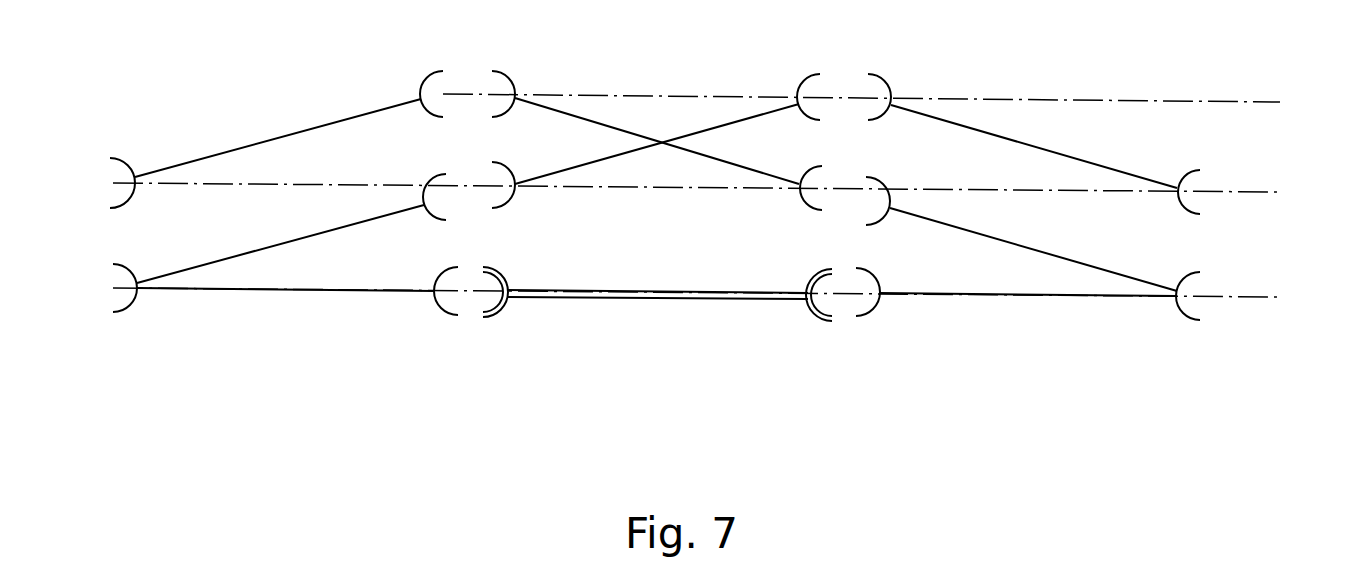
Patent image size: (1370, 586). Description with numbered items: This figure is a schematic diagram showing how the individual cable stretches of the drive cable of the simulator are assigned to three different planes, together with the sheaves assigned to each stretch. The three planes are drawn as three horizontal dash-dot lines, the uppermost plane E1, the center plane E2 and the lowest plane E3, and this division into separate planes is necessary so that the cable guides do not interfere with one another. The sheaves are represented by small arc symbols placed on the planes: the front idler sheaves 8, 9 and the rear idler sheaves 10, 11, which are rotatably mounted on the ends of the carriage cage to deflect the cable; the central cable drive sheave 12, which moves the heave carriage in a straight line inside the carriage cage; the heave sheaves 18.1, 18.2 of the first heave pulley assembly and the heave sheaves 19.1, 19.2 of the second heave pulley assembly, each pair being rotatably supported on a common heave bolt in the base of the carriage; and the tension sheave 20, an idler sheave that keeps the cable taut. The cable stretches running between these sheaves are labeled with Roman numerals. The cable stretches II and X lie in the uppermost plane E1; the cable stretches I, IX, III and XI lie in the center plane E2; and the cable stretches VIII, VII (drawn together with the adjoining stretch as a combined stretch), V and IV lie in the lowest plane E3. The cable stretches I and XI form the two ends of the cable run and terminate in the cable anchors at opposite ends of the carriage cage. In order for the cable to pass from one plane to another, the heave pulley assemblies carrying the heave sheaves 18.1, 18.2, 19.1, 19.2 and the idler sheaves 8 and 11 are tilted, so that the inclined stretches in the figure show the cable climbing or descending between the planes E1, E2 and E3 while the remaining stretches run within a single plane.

The front idler sheave 8 is at (587, 120).
The front idler sheave 9 is at (955, 297).
The rear idler sheave 10 is at (333, 290).
The rear idler sheave 11 is at (733, 120).
The central cable drive sheave 12 is at (738, 292).
The heave sheave 18.1 is at (297, 131).
The heave sheave 18.2 is at (232, 258).
The heave sheave 19.1 is at (1010, 138).
The heave sheave 19.2 is at (1060, 258).
The tension sheave 20 is at (560, 300).
The uppermost plane E1 is at (902, 104).
The center plane E2 is at (737, 197).
The lowest plane E3 is at (737, 300).
The cable stretch I is at (99, 183).
The cable stretch II is at (467, 71).
The cable stretch III is at (846, 179).
The cable stretch IV is at (1211, 326).
The cable stretch V is at (843, 320).
The cable stretch VII is at (465, 326).
The cable stretch VIII is at (97, 288).
The cable stretch IX is at (469, 172).
The cable stretch X is at (844, 72).
The cable stretch XI is at (1216, 168).